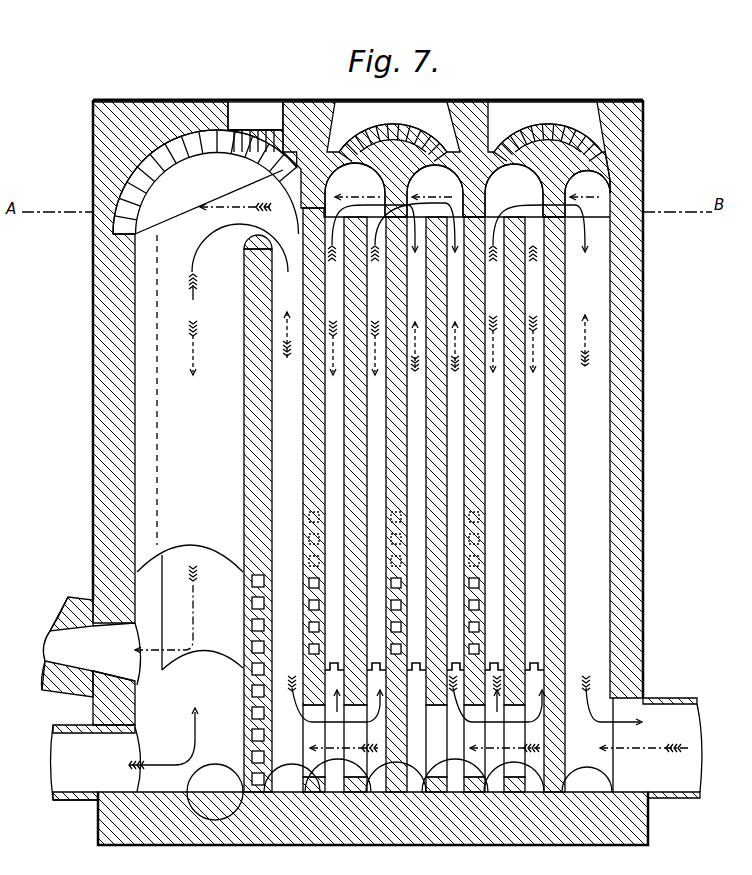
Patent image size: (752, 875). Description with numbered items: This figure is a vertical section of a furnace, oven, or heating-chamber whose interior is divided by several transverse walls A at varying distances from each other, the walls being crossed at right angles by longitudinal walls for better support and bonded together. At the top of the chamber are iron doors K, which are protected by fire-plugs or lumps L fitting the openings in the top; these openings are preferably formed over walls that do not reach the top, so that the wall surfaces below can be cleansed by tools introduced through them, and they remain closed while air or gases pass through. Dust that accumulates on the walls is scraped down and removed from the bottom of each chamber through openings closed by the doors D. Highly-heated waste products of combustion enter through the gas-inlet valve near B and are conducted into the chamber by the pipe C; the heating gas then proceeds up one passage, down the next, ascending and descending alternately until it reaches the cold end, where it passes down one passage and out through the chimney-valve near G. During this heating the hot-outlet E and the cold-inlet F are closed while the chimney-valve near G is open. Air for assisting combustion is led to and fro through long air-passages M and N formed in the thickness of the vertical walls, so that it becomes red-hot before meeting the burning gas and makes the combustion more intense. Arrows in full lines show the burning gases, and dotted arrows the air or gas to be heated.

The transverse walls A is at (420, 504).
The gas-inlet valve B is at (93, 762).
The pipe C is at (67, 808).
The doors D is at (397, 775).
The hot-outlet E is at (135, 647).
The cold-inlet F is at (678, 700).
The chimney-valve G is at (657, 748).
The iron doors K is at (412, 104).
The fire-plugs or lumps L is at (434, 165).
The air-passage M is at (258, 513).
The air-passage N is at (423, 500).